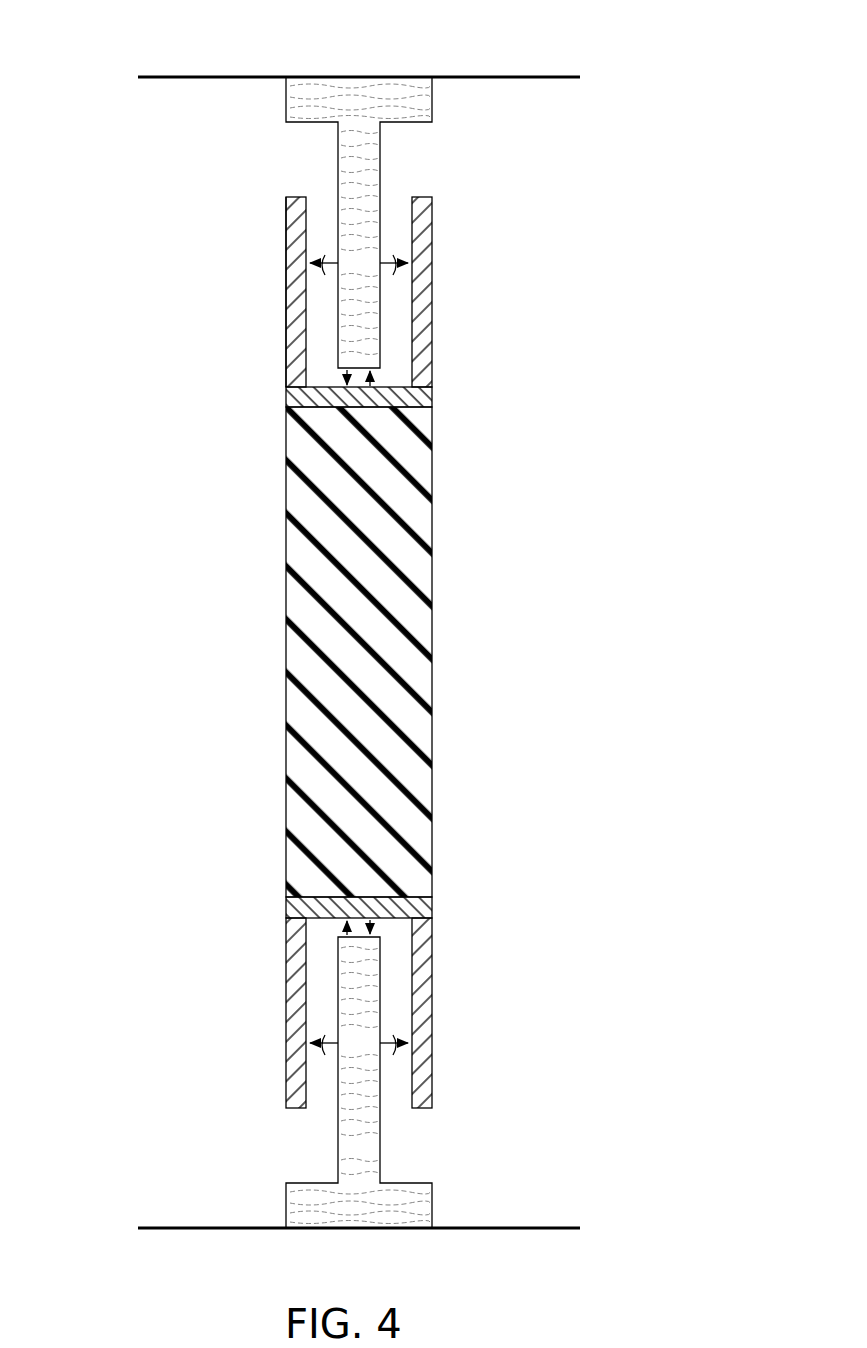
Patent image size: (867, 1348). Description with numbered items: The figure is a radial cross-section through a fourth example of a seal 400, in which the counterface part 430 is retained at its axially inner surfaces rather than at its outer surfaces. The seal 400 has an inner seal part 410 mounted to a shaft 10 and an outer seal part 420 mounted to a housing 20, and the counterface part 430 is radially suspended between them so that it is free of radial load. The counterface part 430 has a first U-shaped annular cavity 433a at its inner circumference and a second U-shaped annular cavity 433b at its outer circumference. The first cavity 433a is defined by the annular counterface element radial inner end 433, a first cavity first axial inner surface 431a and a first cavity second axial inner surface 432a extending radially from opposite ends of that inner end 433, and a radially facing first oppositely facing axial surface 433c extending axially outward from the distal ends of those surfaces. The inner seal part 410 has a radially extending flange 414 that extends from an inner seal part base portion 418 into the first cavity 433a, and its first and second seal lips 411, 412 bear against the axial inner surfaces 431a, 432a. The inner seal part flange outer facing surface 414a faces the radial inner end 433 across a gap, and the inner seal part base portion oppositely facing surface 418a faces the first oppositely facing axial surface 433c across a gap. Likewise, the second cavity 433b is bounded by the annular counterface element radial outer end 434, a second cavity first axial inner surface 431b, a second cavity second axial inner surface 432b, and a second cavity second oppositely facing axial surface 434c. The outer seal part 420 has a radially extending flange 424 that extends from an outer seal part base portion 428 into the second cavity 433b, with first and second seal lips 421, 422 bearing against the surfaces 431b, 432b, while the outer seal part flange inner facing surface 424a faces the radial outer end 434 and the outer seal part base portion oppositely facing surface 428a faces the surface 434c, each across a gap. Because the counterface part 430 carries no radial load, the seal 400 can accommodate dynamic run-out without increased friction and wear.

The shaft 10 is at (205, 1230).
The housing 20 is at (538, 77).
The seal 400 is at (672, 641).
The inner seal part 410 is at (430, 1144).
The first seal lip 411 is at (298, 1065).
The second seal lip 412 is at (422, 1065).
The radially extending flange 414 is at (357, 1148).
The inner seal part flange outer facing surface 414a is at (422, 912).
The inner seal part base portion 418 is at (320, 1198).
The inner seal part base portion oppositely facing surface 418a is at (298, 1181).
The outer seal part 420 is at (432, 151).
The first seal lip 421 is at (296, 290).
The second seal lip 422 is at (420, 292).
The radially extending flange 424 is at (358, 173).
The outer seal part flange inner facing surface 424a is at (422, 393).
The outer seal part base portion 428 is at (317, 103).
The outer seal part base portion oppositely facing surface 428a is at (298, 126).
The counterface part 430 is at (322, 755).
The first cavity first axial inner surface 431a is at (311, 996).
The second cavity first axial inner surface 431b is at (310, 343).
The first cavity second axial inner surface 432a is at (407, 953).
The second cavity second axial inner surface 432b is at (409, 208).
The annular counterface element radial inner end 433 is at (330, 945).
The first U-shaped annular cavity 433a is at (392, 982).
The second U-shaped annular cavity 433b is at (323, 320).
The first oppositely facing axial surface 433c is at (298, 1110).
The annular counterface element radial outer end 434 is at (310, 358).
The second cavity second oppositely facing axial surface 434c is at (298, 195).